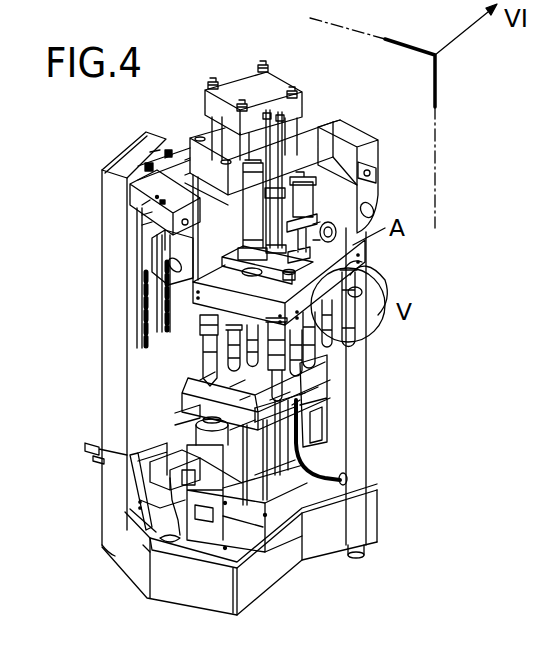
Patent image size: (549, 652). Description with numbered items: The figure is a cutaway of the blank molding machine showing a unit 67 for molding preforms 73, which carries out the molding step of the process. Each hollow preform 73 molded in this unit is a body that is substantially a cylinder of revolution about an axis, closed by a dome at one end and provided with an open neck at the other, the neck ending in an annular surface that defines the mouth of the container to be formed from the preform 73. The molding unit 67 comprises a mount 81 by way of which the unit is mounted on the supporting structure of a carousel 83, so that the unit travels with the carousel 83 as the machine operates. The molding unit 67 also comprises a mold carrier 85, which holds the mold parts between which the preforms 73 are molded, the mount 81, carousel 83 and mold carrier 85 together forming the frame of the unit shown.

The unit for molding preforms 67 is at (385, 270).
The preform 73 is at (362, 340).
The mount 81 is at (322, 543).
The carousel 83 is at (367, 141).
The mold carrier 85 is at (327, 413).